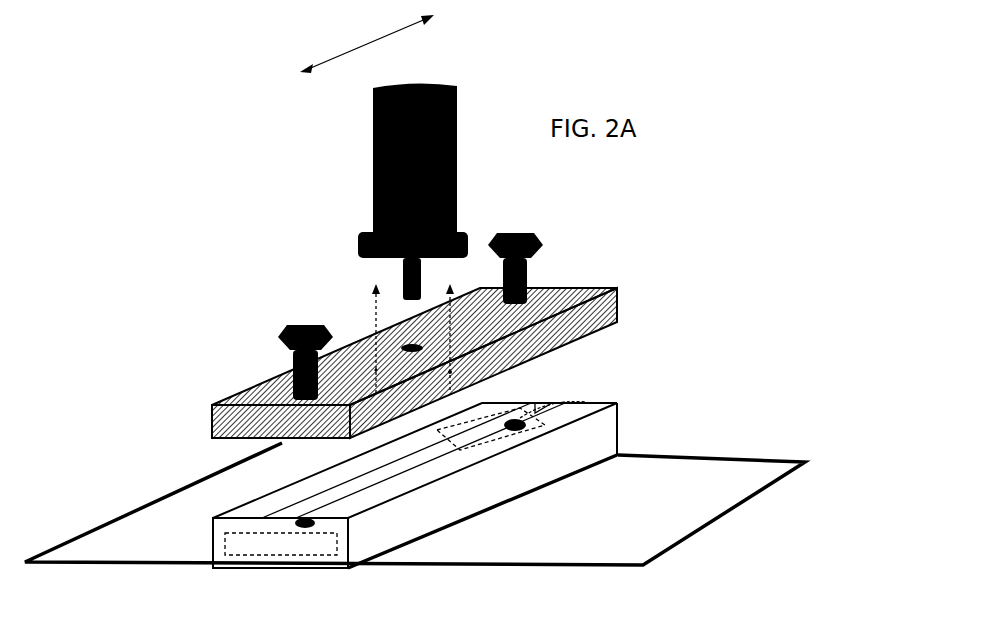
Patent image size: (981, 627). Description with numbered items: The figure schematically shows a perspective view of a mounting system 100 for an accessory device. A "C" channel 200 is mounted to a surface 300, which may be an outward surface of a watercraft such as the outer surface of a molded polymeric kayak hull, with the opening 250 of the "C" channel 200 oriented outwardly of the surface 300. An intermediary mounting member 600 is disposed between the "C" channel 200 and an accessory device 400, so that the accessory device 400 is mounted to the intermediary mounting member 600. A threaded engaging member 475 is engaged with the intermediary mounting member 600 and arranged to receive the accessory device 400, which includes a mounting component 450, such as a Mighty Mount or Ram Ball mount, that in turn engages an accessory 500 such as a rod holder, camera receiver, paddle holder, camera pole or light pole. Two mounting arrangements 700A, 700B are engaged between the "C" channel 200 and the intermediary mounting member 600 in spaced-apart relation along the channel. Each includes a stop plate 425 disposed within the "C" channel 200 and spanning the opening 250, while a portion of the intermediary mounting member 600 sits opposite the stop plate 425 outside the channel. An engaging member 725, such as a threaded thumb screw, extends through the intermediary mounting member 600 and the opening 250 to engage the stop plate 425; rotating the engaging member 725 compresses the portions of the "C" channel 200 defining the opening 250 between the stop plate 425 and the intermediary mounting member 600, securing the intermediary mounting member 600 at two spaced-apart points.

The mounting system 100 is at (192, 236).
The "C" channel 200 is at (617, 420).
The opening 250 is at (553, 387).
The surface 300 is at (633, 520).
The accessory device 400 is at (474, 107).
The stop plate 425 is at (275, 542).
The mounting component 450 is at (357, 247).
The threaded engaging member 475 is at (400, 262).
The accessory 500 is at (373, 153).
The intermediary mounting member 600 is at (617, 303).
The mounting arrangement 700A is at (282, 325).
The mounting arrangement 700B is at (536, 229).
The engaging member 725 is at (270, 380).